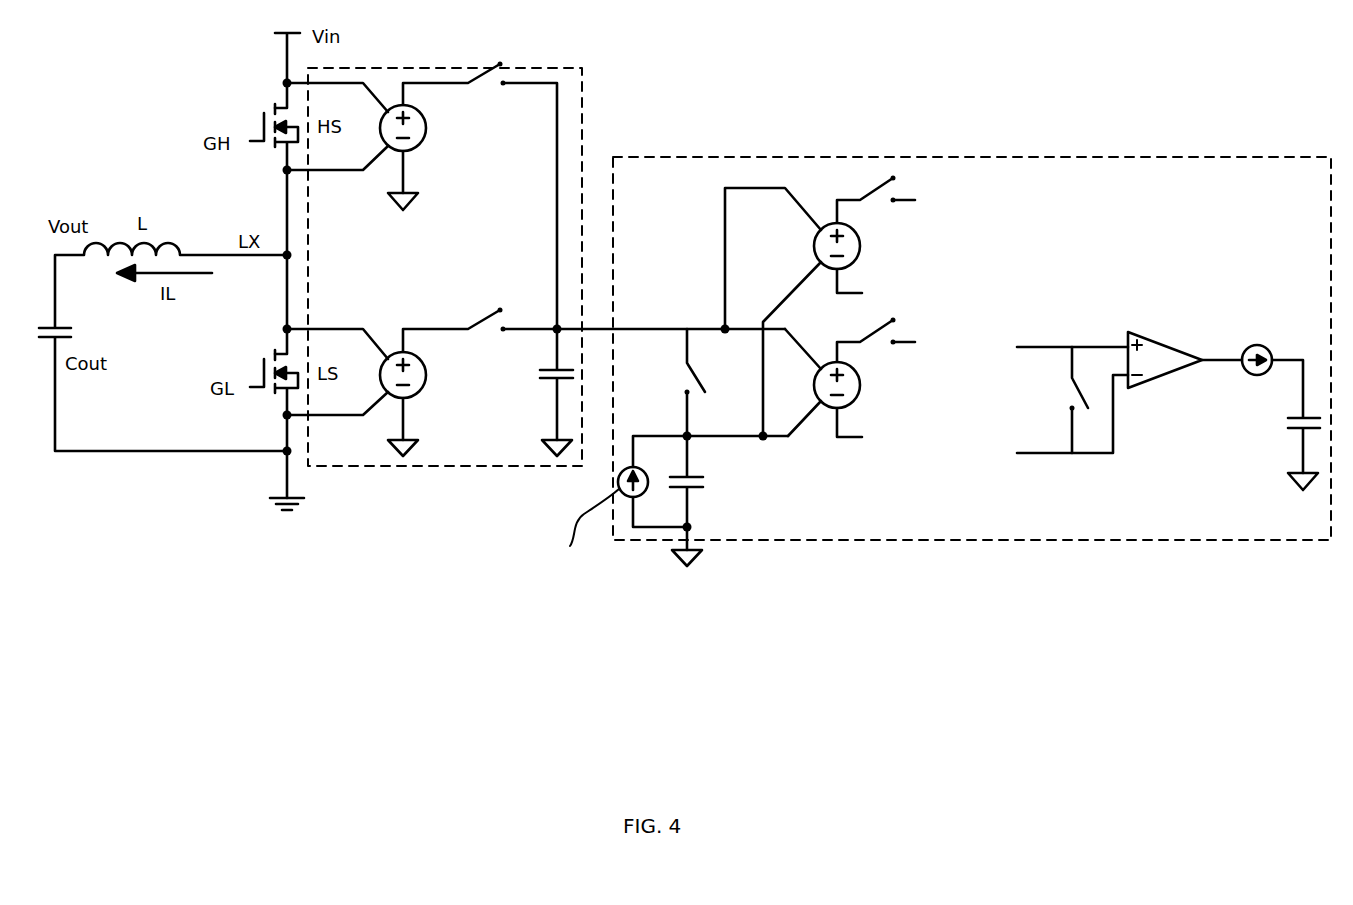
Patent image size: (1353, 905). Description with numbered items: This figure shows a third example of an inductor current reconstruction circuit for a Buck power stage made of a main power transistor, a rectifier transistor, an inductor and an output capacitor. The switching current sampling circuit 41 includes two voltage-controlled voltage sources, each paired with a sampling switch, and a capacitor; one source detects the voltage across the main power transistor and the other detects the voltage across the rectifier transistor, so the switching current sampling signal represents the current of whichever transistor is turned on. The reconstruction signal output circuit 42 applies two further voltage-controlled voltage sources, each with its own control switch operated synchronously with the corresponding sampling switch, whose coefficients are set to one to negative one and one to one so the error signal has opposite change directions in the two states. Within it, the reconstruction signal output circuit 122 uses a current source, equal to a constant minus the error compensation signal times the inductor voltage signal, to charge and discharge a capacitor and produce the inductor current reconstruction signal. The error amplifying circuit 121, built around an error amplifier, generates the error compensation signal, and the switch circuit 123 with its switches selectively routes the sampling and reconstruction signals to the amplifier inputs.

The switching current sampling circuit 41 is at (583, 128).
The reconstruction signal output circuit 42 is at (890, 369).
The error amplifying circuit 121 is at (1172, 405).
The reconstruction signal output circuit 122 is at (766, 466).
The switch circuit 123 is at (1108, 487).